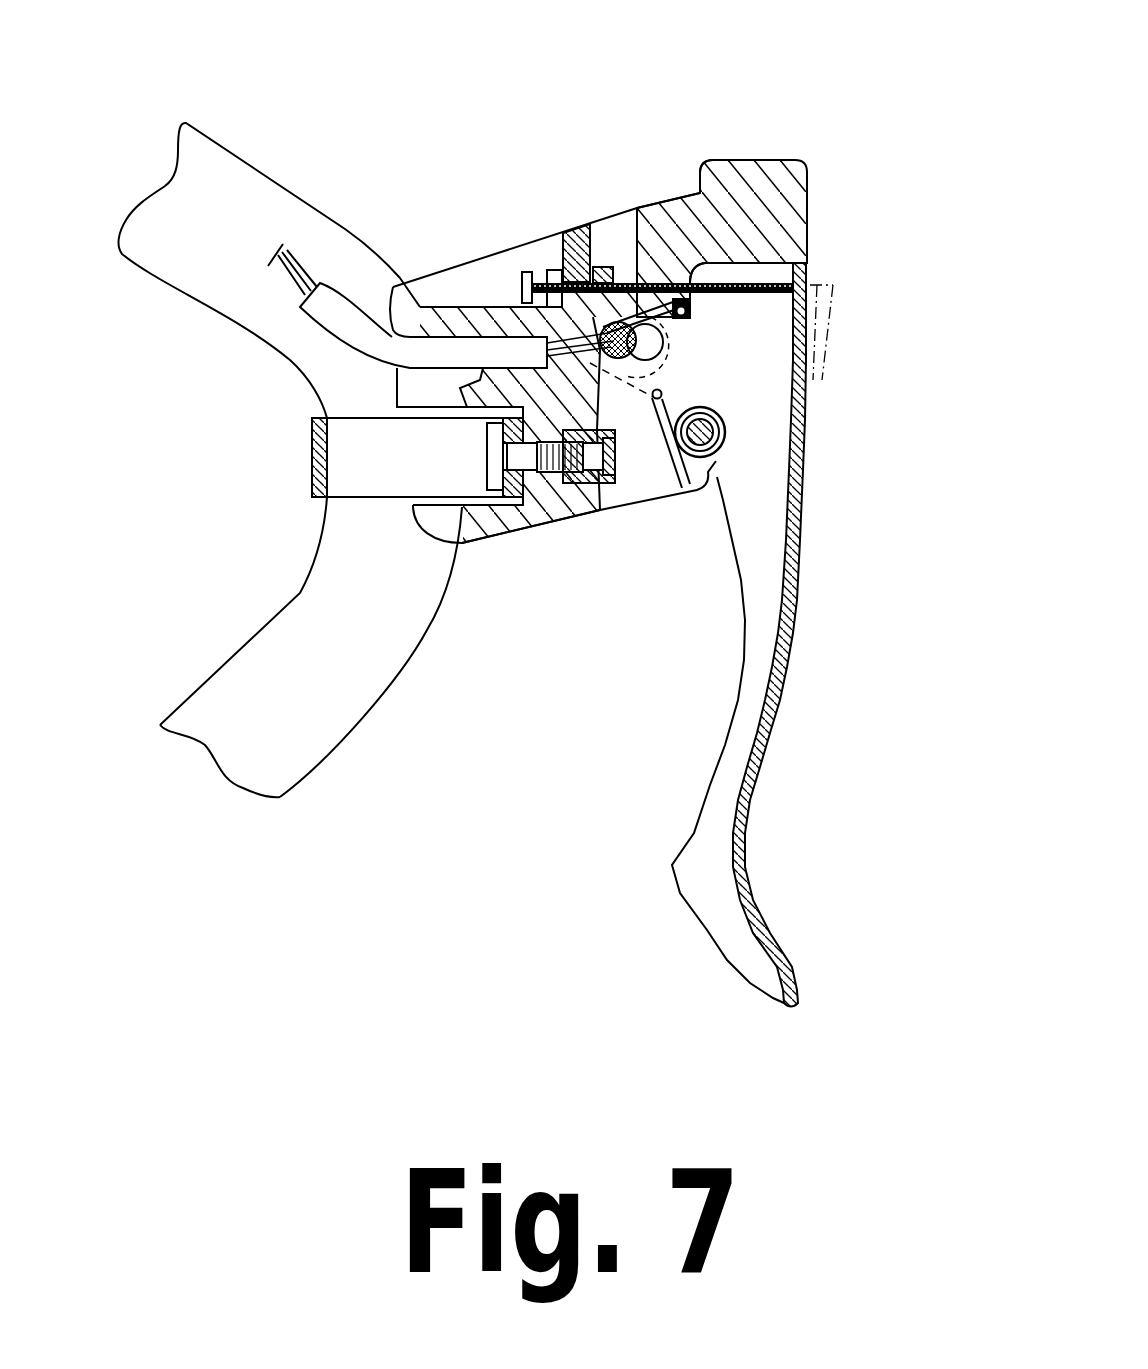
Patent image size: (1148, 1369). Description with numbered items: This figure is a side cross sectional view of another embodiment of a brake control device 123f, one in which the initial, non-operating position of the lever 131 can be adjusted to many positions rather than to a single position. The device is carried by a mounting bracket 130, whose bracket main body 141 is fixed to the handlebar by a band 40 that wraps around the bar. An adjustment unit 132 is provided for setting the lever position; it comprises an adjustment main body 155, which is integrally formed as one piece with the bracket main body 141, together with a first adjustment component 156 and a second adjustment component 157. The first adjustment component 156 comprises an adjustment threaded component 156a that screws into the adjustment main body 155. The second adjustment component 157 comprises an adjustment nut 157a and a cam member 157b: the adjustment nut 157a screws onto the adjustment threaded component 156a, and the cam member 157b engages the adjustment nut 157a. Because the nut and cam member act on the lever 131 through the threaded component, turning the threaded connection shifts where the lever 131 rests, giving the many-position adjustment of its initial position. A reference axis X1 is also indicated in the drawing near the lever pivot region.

The adjustment unit 132 is at (525, 222).
The mounting bracket 130 is at (649, 210).
The brake control device 123f is at (710, 117).
The adjustment main body 155 is at (582, 242).
The first adjustment component 156 is at (745, 265).
The adjustment threaded component 156a is at (790, 260).
The second adjustment component 157 is at (683, 332).
The adjustment nut 157a is at (606, 270).
The cam member 157b is at (612, 270).
The pivot axis spring X1 is at (723, 421).
The lever 131 is at (780, 582).
The bracket main body 141 is at (547, 513).
The band 40 is at (307, 493).